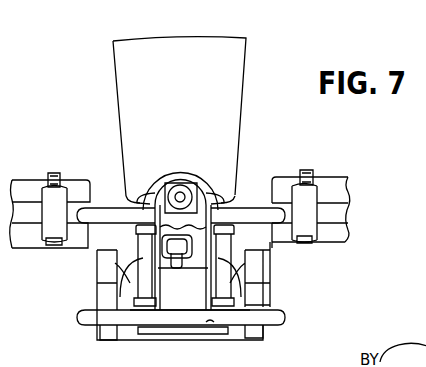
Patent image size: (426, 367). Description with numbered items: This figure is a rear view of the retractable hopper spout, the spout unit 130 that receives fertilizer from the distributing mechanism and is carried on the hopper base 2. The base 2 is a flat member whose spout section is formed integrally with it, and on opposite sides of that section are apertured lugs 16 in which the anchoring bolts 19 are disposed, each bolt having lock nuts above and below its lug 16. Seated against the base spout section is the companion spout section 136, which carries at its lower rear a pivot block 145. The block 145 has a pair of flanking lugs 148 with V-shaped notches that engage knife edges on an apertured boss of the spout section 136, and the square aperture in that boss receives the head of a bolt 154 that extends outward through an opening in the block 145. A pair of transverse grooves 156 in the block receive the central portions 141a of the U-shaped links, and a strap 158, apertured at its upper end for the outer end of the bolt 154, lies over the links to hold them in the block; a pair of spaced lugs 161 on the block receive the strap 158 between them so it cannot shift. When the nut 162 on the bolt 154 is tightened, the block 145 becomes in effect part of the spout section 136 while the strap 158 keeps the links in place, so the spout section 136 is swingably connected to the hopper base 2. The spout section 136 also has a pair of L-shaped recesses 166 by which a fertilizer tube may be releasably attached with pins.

The hopper base 2 is at (340, 168).
The apertured lugs 16 is at (53, 217).
The anchoring bolts 19 is at (53, 175).
The spout unit 130 is at (96, 108).
The companion spout section 136 is at (247, 82).
The central portions of the U-shaped links 141a is at (220, 221).
The pivot block 145 is at (138, 273).
The flanking lugs 148 is at (142, 198).
The bolt 154 is at (181, 195).
The transverse grooves 156 is at (128, 197).
The strap 158 is at (167, 224).
The lugs 161 is at (120, 293).
The nut 162 is at (168, 190).
The L-shaped recesses 166 is at (174, 260).